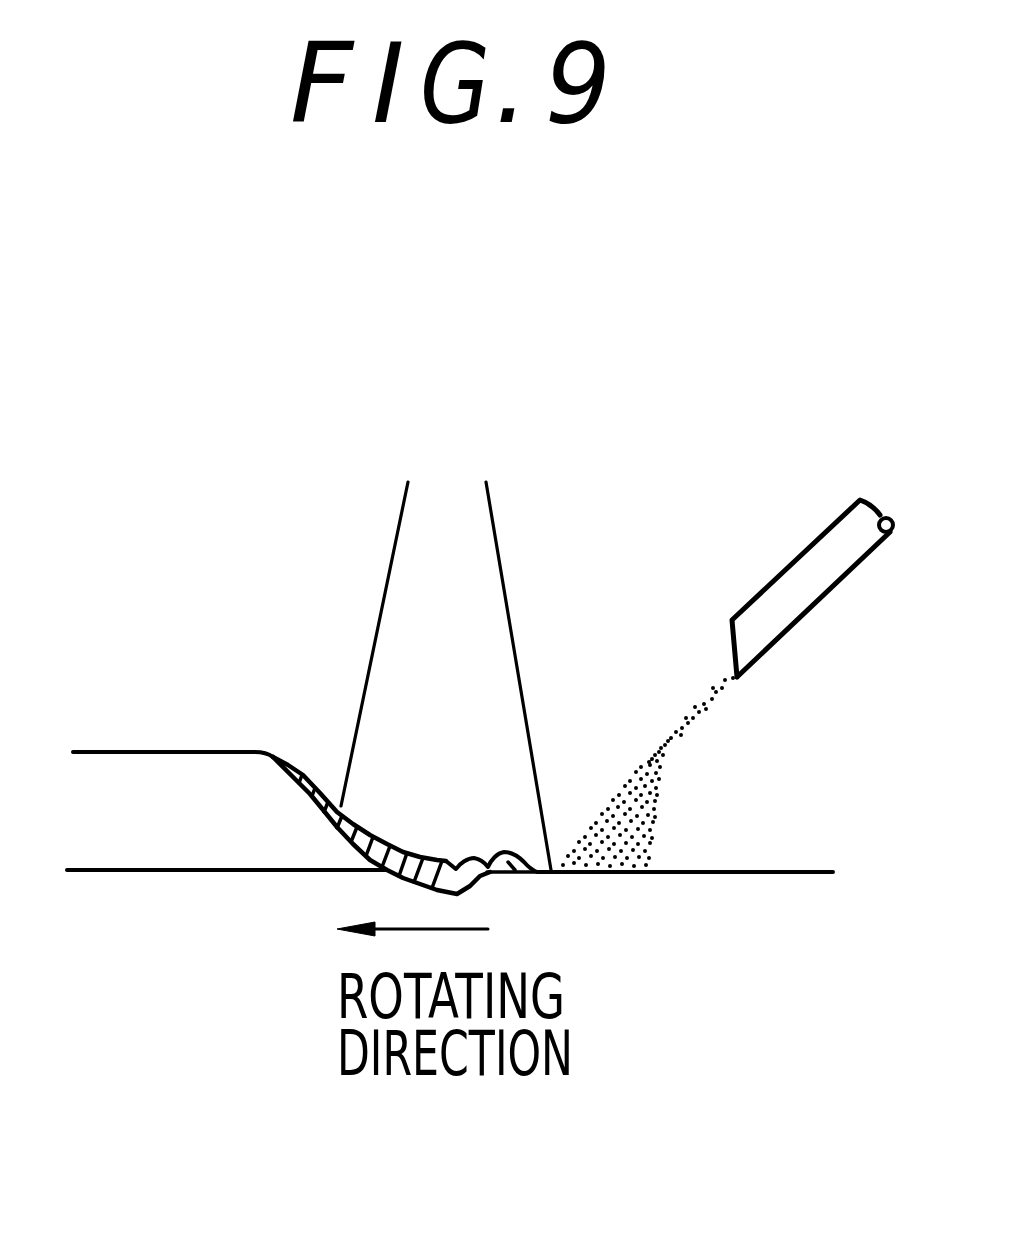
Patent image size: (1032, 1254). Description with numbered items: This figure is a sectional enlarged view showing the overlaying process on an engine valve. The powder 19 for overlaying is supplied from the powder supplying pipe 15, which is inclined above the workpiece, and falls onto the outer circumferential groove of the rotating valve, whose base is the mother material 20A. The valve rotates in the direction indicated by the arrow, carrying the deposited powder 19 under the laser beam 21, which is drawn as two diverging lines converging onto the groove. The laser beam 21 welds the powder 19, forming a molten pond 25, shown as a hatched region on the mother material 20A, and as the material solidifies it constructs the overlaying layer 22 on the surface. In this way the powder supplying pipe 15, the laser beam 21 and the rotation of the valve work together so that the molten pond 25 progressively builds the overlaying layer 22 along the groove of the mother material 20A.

The powder supplying pipe 15 is at (787, 580).
The powder 19 is at (658, 767).
The mother material 20A is at (243, 965).
The laser beam 21 is at (417, 578).
The overlaying layer 22 is at (228, 837).
The molten pond 25 is at (372, 838).